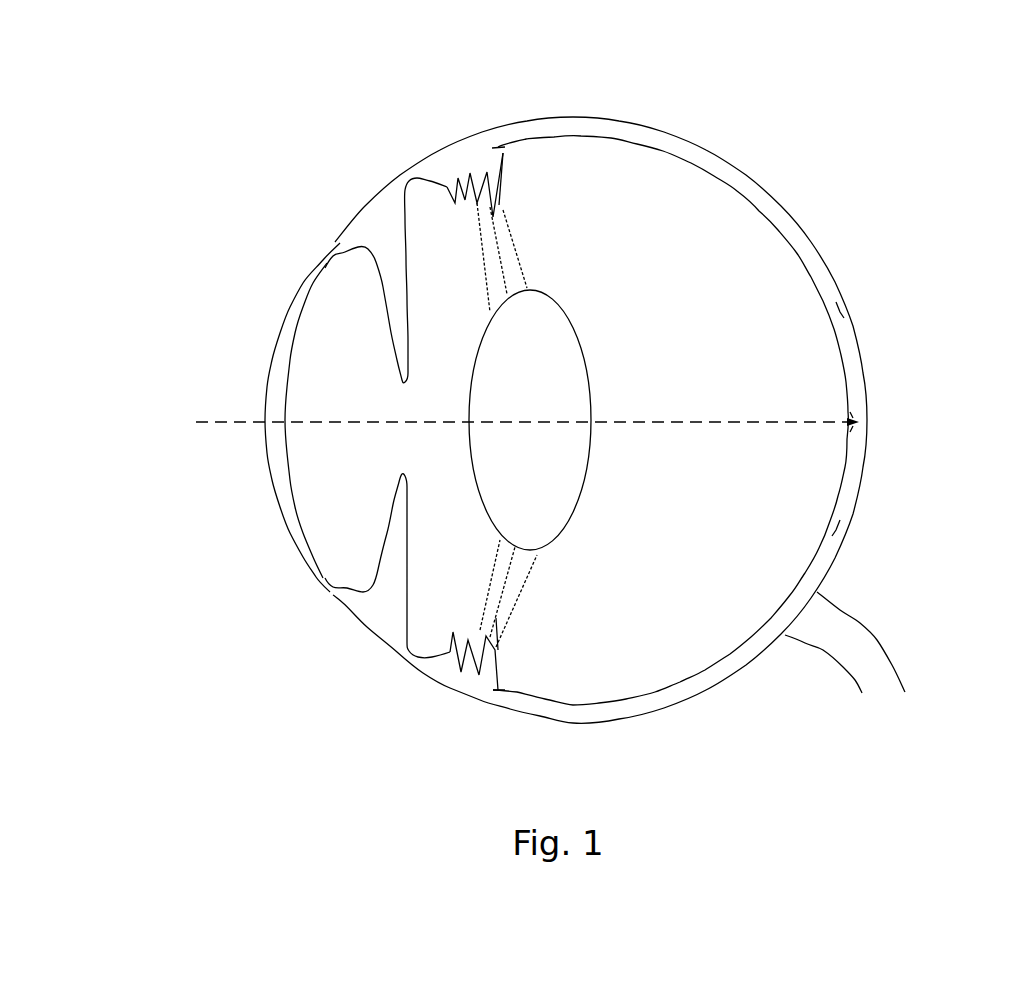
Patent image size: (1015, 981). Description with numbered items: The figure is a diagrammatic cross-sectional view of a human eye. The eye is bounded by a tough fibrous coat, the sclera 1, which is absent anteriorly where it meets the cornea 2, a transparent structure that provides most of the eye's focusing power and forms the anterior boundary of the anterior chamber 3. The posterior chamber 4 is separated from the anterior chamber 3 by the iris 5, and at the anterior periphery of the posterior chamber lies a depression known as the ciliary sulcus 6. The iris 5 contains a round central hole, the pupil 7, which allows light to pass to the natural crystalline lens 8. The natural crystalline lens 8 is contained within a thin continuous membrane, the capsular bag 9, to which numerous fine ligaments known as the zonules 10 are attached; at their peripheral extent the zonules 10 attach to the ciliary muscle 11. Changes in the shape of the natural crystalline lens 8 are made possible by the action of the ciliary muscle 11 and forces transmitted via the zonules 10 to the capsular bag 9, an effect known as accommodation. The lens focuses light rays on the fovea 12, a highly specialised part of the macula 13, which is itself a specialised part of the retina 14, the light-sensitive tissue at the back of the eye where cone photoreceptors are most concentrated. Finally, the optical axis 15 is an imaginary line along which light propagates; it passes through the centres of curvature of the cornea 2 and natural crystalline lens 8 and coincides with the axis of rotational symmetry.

The sclera 1 is at (675, 133).
The cornea 2 is at (268, 488).
The anterior chamber 3 is at (353, 533).
The posterior chamber 4 is at (453, 555).
The iris 5 is at (388, 322).
The ciliary sulcus 6 is at (421, 185).
The pupil 7 is at (398, 410).
The natural crystalline lens 8 is at (554, 357).
The capsular bag 9 is at (591, 460).
The zonules 10 is at (520, 237).
The ciliary muscle 11 is at (446, 658).
The fovea 12 is at (872, 417).
The macula 13 is at (869, 372).
The retina 14 is at (775, 218).
The optical axis 15 is at (192, 423).